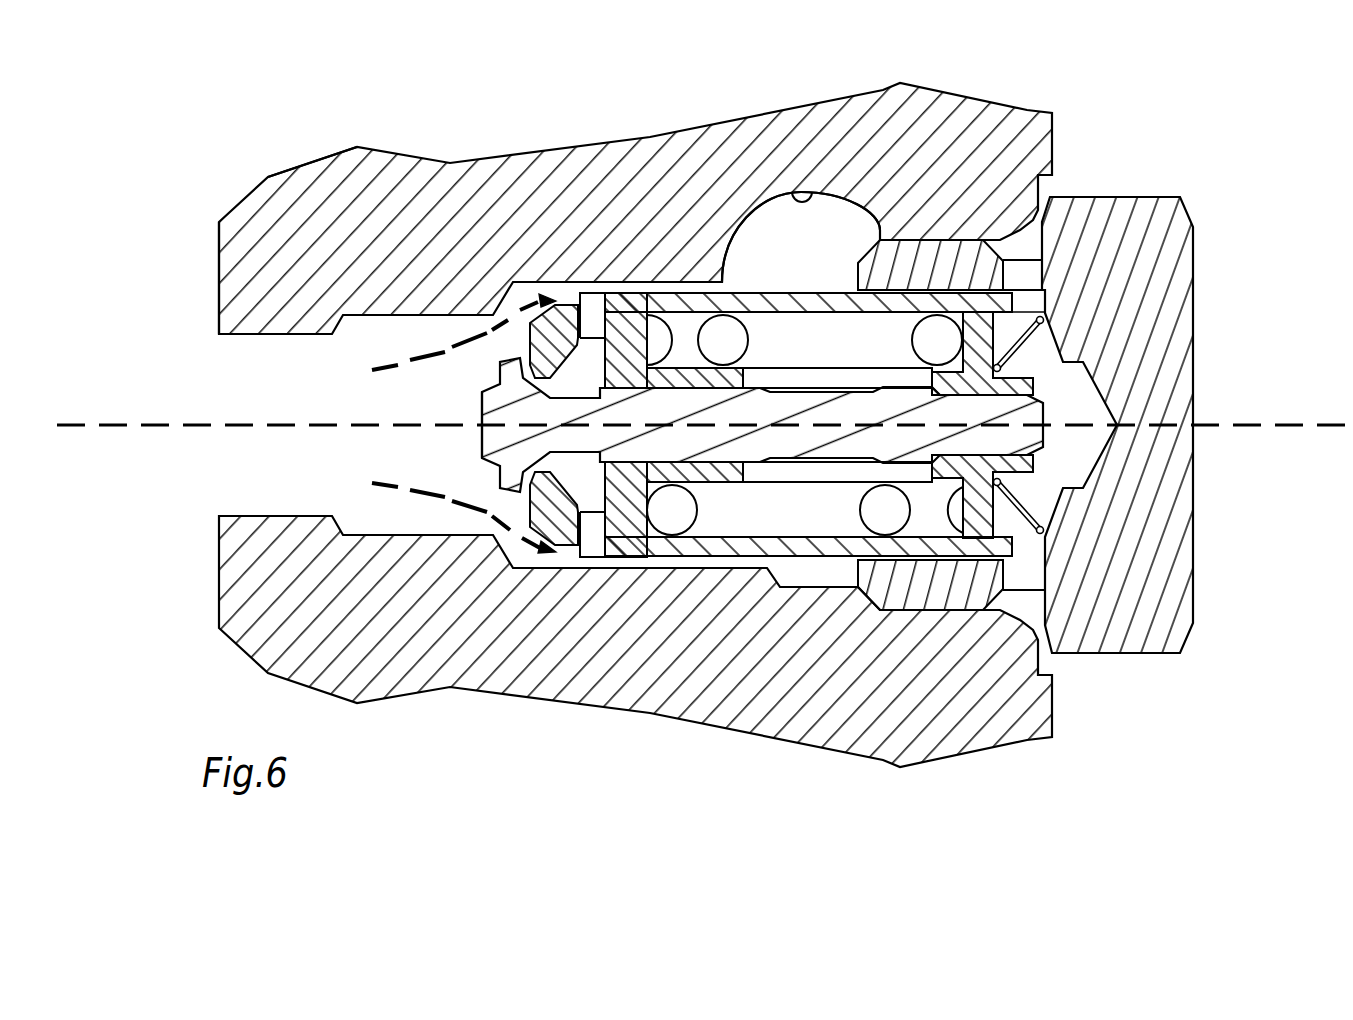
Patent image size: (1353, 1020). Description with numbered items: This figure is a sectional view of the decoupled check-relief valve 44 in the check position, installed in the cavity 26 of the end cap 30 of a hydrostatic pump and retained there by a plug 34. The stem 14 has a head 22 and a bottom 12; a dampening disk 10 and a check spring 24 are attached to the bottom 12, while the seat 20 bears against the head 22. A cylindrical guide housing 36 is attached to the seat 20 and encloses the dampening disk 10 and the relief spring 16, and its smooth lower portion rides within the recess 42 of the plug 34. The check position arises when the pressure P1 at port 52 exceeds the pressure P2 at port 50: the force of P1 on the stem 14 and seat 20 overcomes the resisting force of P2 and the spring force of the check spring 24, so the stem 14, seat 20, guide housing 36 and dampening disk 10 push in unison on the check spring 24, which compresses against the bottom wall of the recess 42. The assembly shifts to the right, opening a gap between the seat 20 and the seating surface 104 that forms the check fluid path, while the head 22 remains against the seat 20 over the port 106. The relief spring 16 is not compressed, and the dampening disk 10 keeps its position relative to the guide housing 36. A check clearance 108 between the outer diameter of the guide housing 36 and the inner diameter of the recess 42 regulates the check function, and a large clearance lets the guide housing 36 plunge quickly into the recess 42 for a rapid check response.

The dampening disk 10 is at (1003, 342).
The bottom of stem 12 is at (1045, 420).
The stem 14 is at (466, 405).
The relief spring 16 is at (663, 530).
The seat 20 is at (540, 300).
The head of stem 22 is at (497, 490).
The check spring 24 is at (1015, 490).
The cavity 26 is at (655, 290).
The end cap 30 is at (1047, 130).
The plug 34 is at (1195, 545).
The guide housing 36 is at (763, 285).
The recess 42 is at (880, 240).
The check-relief valve 44 is at (213, 92).
The port 50 is at (800, 193).
The port 52 is at (240, 338).
The seating surface 104 is at (498, 532).
The port in seat 106 is at (533, 372).
The check clearance 108 is at (1042, 293).